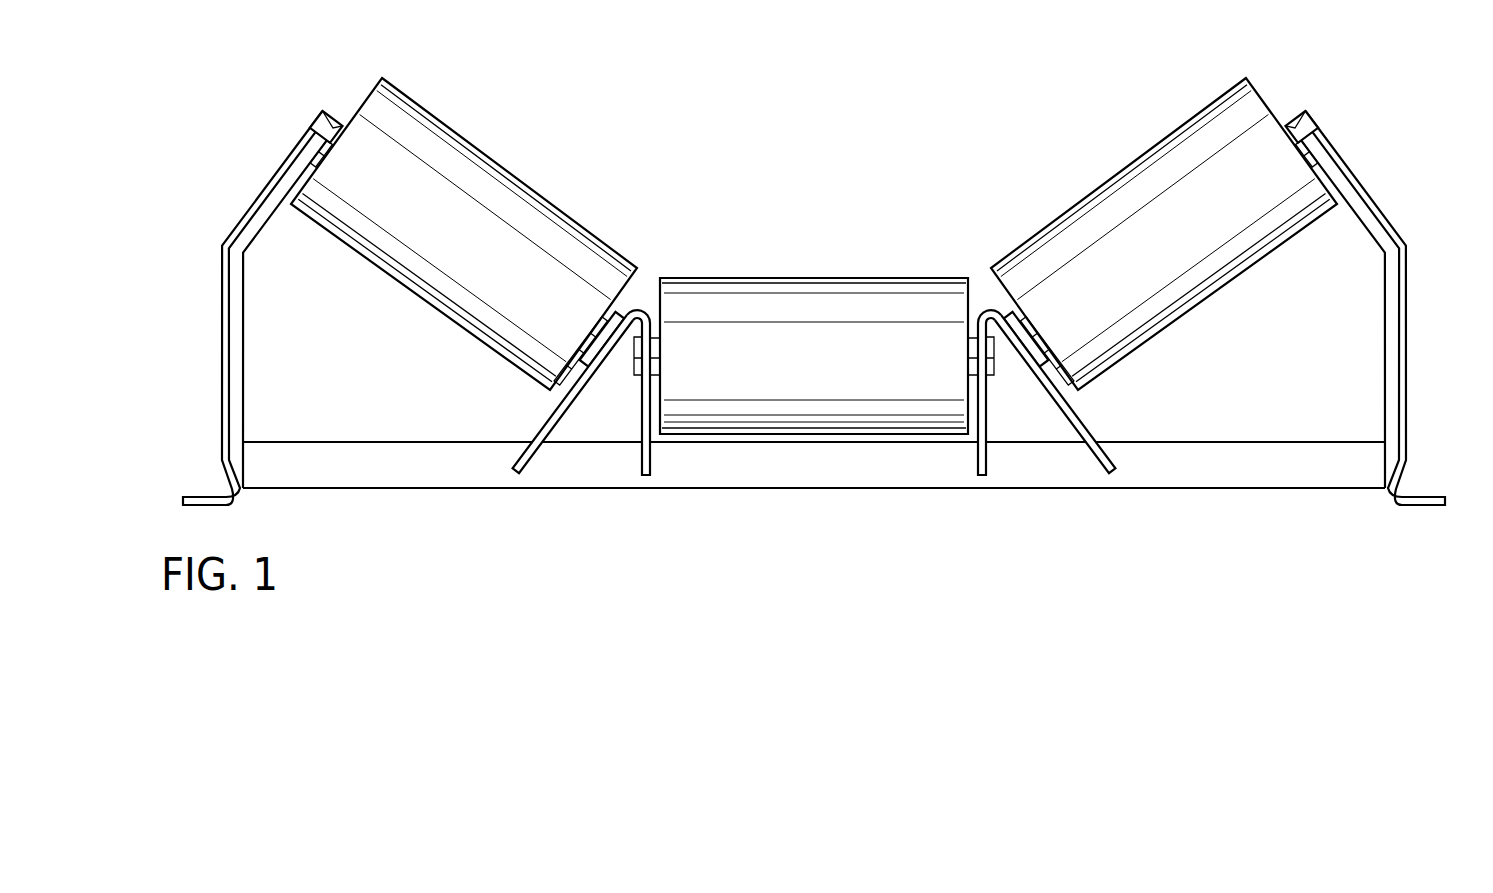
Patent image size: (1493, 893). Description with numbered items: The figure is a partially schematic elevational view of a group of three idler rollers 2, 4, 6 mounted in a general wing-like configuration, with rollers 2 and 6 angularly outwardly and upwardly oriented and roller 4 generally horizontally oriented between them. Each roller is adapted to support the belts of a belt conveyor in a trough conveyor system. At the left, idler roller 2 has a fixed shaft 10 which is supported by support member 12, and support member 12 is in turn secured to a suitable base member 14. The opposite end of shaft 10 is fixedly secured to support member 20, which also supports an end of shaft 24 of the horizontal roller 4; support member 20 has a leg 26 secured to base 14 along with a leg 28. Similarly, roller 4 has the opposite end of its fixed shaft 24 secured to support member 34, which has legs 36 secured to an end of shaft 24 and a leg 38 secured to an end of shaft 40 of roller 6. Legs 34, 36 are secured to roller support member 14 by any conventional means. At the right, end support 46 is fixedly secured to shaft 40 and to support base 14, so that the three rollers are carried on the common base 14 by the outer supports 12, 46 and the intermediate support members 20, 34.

The idler roller 2 is at (510, 156).
The idler roller 4 is at (834, 270).
The idler roller 6 is at (1088, 174).
The fixed shaft 10 is at (311, 104).
The support member 12 is at (211, 287).
The base member 14 is at (405, 500).
The support member 20 is at (598, 424).
The shaft 24 is at (623, 386).
The leg 26 is at (652, 452).
The leg 28 is at (528, 416).
The support member 34 is at (1108, 414).
The leg 36 is at (976, 452).
The leg 38 is at (1041, 419).
The shaft 40 is at (1030, 386).
The end support 46 is at (1419, 287).